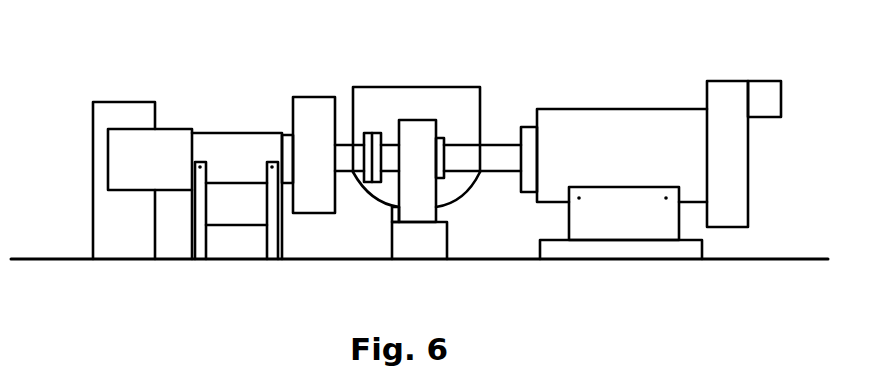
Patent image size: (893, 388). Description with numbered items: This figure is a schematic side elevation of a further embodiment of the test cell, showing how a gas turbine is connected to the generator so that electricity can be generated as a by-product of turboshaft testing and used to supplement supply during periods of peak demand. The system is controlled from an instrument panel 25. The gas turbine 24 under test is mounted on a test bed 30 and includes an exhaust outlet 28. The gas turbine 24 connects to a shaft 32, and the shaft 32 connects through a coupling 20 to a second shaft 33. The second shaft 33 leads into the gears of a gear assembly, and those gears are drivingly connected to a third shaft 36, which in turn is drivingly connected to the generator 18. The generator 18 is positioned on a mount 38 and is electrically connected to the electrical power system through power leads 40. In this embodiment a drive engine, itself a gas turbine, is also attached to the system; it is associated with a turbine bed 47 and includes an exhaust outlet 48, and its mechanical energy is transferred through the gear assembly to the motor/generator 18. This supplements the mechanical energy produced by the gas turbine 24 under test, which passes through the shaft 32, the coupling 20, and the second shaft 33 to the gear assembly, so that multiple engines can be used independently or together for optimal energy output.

The generator 18 is at (615, 109).
The coupling 20 is at (368, 133).
The gas turbine 24 is at (225, 132).
The instrument panel 25 is at (112, 102).
The exhaust outlet 28 is at (307, 102).
The test bed 30 is at (228, 248).
The shaft 32 is at (352, 173).
The second shaft 33 is at (390, 173).
The third shaft 36 is at (495, 173).
The mount 38 is at (640, 225).
The power leads 40 is at (763, 85).
The turbine bed 47 is at (427, 248).
The exhaust outlet 48 is at (438, 102).